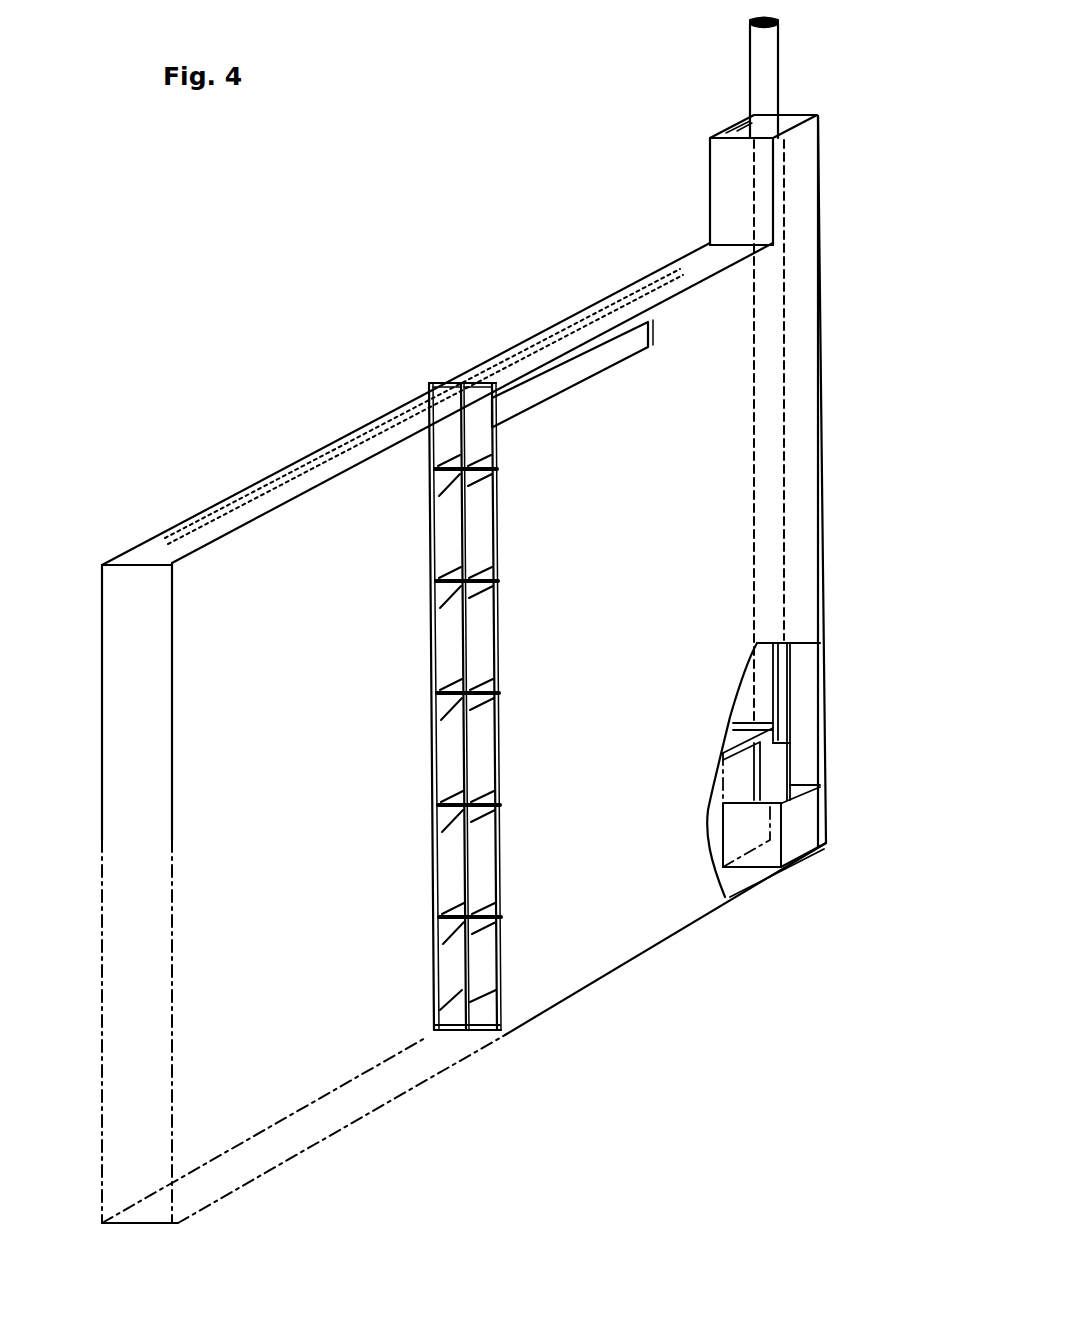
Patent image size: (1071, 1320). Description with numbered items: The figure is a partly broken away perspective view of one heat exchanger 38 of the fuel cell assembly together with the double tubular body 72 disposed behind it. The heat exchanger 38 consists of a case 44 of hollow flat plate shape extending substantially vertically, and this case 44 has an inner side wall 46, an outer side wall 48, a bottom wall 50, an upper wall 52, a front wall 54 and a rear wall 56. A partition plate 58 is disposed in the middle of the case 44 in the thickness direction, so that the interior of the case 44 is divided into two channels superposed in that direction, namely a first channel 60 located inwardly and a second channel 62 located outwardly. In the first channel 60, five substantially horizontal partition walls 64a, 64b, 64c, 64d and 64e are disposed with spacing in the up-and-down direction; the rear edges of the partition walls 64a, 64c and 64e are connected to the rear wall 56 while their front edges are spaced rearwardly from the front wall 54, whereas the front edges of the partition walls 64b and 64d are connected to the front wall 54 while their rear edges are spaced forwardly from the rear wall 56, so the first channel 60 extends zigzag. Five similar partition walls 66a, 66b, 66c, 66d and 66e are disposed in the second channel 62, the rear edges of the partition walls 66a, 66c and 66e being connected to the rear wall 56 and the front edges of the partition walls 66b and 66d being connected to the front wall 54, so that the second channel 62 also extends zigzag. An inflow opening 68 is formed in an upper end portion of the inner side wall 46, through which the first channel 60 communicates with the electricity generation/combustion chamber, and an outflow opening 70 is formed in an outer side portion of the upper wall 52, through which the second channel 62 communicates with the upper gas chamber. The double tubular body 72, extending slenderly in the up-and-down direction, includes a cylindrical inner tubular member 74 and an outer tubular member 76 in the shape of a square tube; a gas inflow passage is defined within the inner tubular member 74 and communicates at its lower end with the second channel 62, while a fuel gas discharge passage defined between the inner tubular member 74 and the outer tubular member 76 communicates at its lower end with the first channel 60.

The heat exchanger 38 is at (530, 311).
The case 44 is at (574, 1011).
The inner side wall 46 is at (655, 912).
The outer side wall 48 is at (425, 737).
The bottom wall 50 is at (478, 1035).
The upper wall 52 is at (482, 380).
The front wall 54 is at (128, 822).
The rear wall 56 is at (735, 243).
The partition plate 58 is at (465, 790).
The first channel 60 is at (484, 646).
The second channel 62 is at (442, 554).
The partition wall 64a is at (498, 477).
The partition wall 64b is at (499, 586).
The partition wall 64c is at (500, 698).
The partition wall 64d is at (501, 811).
The partition wall 64e is at (502, 919).
The partition wall 66a is at (428, 508).
The partition wall 66b is at (445, 608).
The partition wall 66c is at (438, 710).
The partition wall 66d is at (446, 828).
The partition wall 66e is at (440, 940).
The inflow opening 68 is at (538, 396).
The outflow opening 70 is at (598, 305).
The double tubular body 72 is at (826, 301).
The inner tubular member 74 is at (780, 56).
The outer tubular member 76 is at (825, 148).